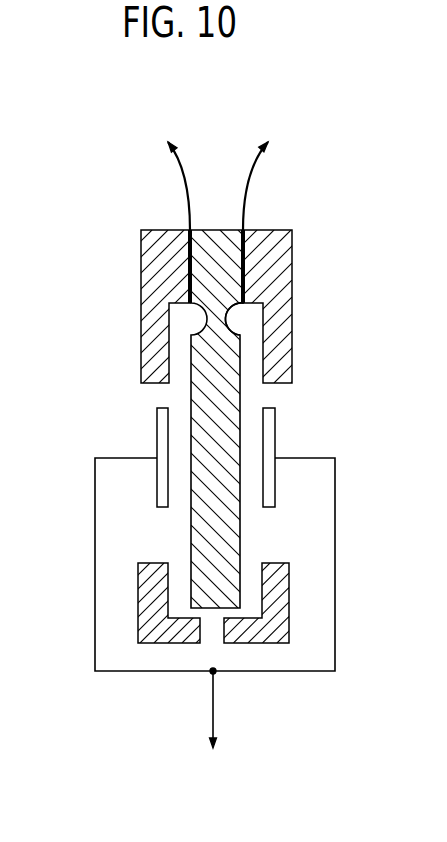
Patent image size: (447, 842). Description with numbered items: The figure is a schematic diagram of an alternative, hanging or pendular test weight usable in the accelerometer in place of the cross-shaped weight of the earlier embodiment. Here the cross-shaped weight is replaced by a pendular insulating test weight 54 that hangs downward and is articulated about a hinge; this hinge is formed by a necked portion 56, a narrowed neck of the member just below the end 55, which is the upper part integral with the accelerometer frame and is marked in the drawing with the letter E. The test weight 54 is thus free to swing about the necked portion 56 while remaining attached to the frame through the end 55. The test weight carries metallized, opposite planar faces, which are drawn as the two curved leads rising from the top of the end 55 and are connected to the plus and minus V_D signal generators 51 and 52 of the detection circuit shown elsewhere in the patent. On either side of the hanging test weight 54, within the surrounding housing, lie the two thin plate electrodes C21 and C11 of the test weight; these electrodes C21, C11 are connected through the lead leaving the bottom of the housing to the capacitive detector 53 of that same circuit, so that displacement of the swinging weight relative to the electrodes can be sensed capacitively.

The signal generator 51 is at (284, 134).
The signal generator 52 is at (166, 150).
The capacitive detector 53 is at (217, 751).
The pendular insulating test weight 54 is at (192, 535).
The end 55 is at (216, 228).
The necked portion 56 is at (244, 320).
The electrode E is at (223, 374).
The electrode C21 is at (180, 413).
The electrode C11 is at (250, 427).